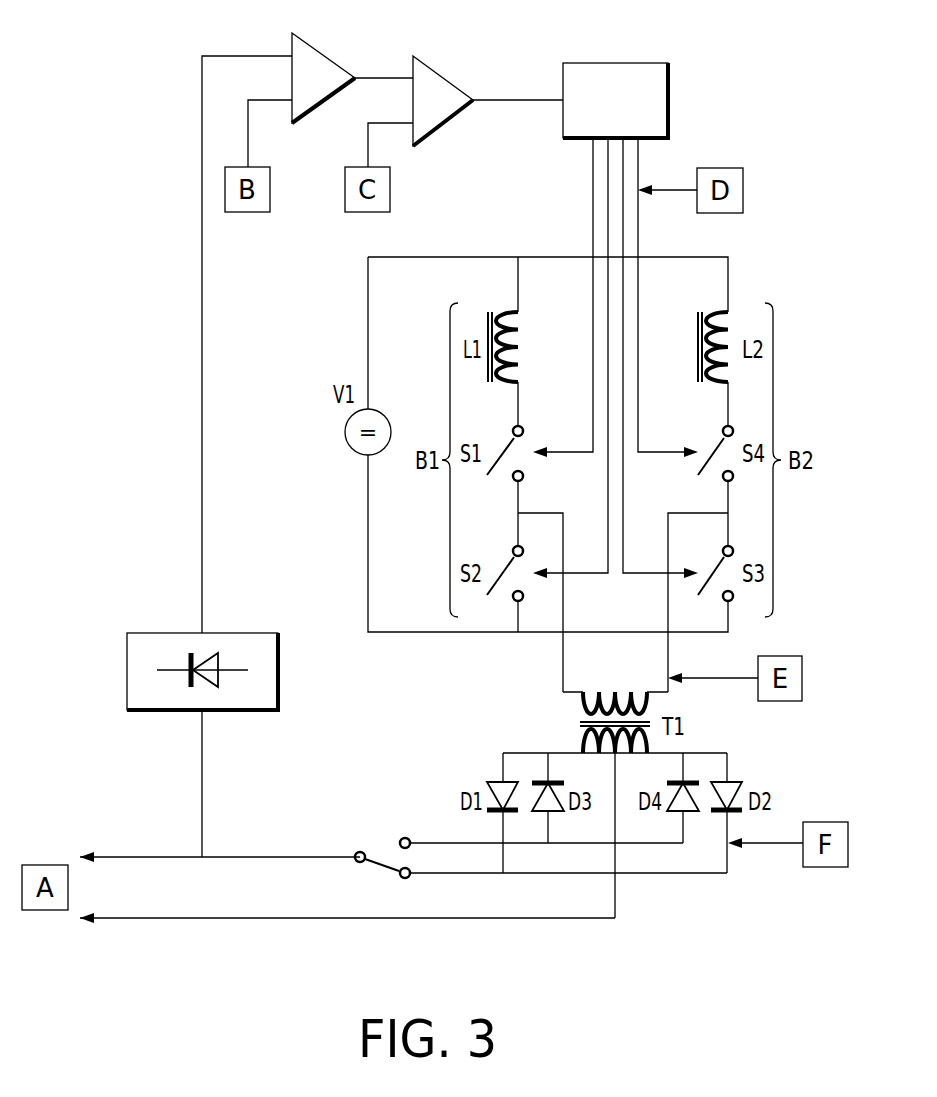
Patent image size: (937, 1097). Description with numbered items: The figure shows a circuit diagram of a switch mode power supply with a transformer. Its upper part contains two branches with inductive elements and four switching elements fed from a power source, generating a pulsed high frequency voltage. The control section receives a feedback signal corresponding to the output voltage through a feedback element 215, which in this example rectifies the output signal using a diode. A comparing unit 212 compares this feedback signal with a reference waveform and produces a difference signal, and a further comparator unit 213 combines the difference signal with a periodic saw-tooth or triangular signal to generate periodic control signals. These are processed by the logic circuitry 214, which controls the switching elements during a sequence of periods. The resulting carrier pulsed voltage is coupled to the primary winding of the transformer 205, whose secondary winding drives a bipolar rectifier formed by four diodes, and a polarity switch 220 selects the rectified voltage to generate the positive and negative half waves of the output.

The comparing unit 212 is at (327, 57).
The further comparator unit 213 is at (440, 74).
The logic circuitry 214 is at (627, 63).
The feedback element 215 is at (148, 633).
The transformer 205 is at (582, 739).
The polarity switch 220 is at (385, 848).